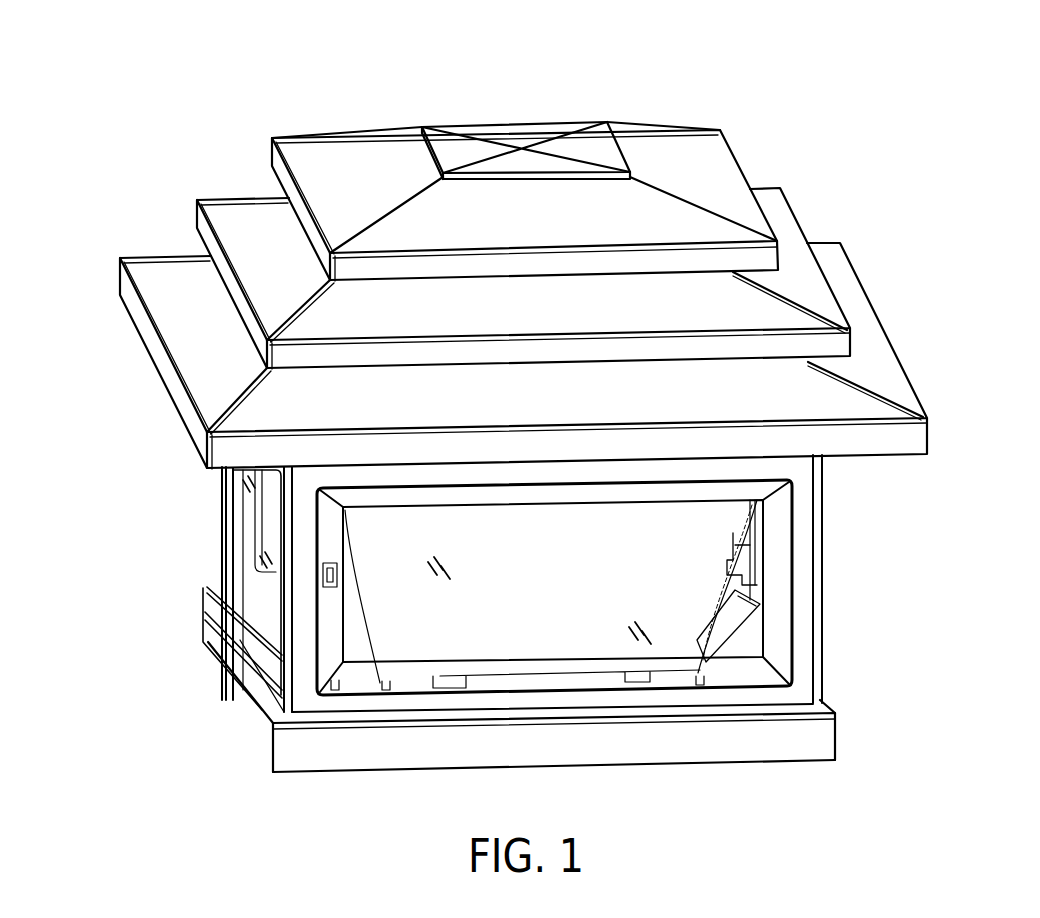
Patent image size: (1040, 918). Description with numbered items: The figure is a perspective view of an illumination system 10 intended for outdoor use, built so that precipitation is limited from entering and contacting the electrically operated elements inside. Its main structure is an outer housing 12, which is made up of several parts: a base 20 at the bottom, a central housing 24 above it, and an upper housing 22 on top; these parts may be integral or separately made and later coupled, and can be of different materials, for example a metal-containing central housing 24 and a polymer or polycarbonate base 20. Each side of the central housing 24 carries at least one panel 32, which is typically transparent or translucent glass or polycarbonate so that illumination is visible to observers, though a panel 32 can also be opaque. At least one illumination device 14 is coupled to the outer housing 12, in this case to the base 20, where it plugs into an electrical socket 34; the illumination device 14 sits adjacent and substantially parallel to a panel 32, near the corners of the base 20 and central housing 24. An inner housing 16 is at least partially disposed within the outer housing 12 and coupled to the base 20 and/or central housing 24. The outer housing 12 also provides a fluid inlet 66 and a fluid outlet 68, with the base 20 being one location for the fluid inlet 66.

The illumination system 10 is at (913, 103).
The outer housing 12 is at (927, 455).
The illumination device 14 is at (757, 627).
The inner housing 16 is at (342, 500).
The base 20 is at (272, 648).
The upper housing 22 is at (451, 132).
The central housing 24 is at (272, 772).
The panel 32 is at (763, 566).
The electrical socket 34 is at (821, 626).
The fluid inlet 66 is at (698, 774).
The fluid outlet 68 is at (787, 267).